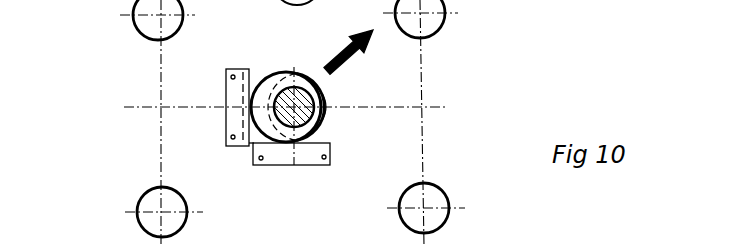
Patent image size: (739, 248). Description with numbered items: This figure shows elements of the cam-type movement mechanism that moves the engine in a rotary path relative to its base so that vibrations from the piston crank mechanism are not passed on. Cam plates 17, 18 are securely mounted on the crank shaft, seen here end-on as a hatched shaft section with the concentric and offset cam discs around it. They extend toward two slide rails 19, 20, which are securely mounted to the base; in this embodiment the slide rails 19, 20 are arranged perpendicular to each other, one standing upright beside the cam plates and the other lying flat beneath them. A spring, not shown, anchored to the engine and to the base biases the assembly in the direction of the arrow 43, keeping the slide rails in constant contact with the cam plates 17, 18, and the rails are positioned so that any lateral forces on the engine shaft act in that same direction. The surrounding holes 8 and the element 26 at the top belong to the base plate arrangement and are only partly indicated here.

The bolt hole 8 is at (148, 36).
The cam plate 17 is at (265, 80).
The cam plate 18 is at (332, 100).
The slide rail 19 is at (226, 86).
The slide rail 20 is at (310, 165).
The guide element 26 is at (270, 3).
The arrow 43 is at (333, 58).